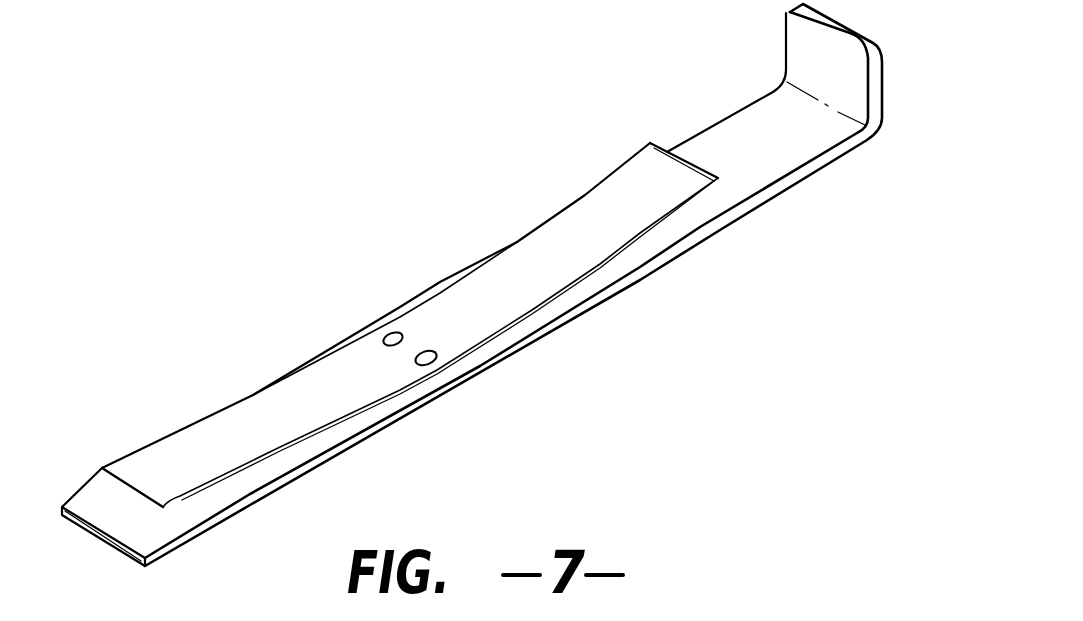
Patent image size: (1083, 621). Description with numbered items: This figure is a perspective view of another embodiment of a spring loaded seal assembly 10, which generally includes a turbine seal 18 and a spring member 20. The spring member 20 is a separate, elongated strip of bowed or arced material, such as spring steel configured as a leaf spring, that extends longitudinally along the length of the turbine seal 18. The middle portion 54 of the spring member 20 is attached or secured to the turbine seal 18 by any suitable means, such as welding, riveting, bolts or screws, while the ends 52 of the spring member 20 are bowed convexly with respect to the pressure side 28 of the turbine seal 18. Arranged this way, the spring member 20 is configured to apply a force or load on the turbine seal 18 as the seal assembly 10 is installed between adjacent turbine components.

The spring loaded seal assembly 10 is at (463, 285).
The turbine seal 18 is at (472, 285).
The spring member 20 is at (381, 302).
The pressure side 28 is at (753, 175).
The ends 52 is at (667, 157).
The middle portion 54 is at (442, 350).